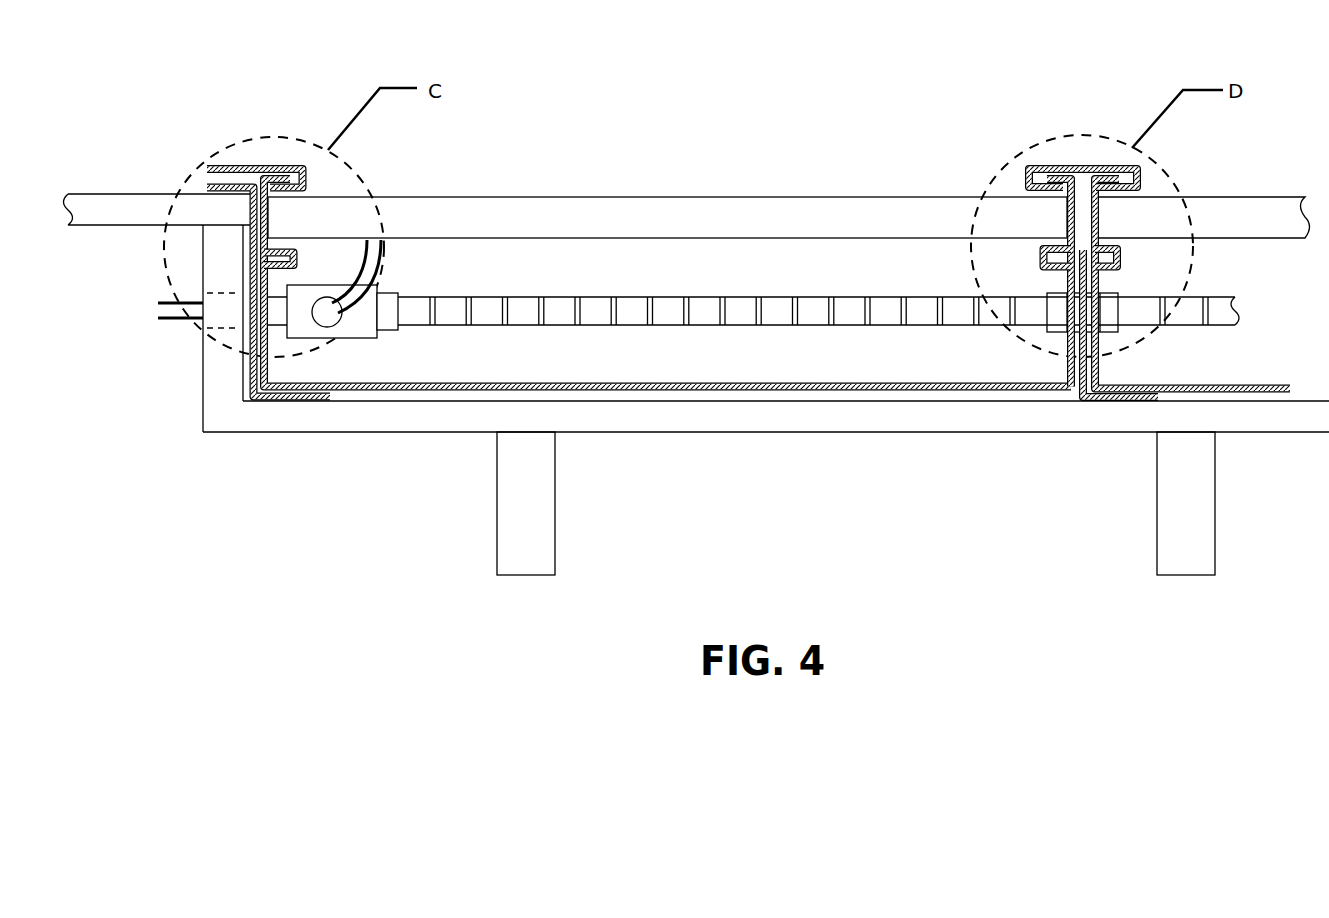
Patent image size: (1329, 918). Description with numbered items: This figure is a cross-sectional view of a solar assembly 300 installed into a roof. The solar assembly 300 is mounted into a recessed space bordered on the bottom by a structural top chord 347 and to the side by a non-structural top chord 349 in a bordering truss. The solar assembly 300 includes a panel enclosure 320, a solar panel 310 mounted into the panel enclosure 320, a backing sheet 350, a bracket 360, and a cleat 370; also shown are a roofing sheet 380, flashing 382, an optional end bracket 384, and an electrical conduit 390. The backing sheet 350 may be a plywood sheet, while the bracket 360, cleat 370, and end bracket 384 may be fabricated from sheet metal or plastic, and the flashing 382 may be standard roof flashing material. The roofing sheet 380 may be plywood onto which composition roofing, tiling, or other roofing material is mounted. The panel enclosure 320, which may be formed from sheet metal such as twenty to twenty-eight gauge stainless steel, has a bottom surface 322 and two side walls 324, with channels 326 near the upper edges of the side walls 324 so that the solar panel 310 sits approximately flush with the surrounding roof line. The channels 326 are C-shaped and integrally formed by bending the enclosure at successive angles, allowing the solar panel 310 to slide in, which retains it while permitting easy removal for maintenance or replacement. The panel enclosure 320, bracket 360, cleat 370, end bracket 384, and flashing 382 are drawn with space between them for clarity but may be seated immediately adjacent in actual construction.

The solar assembly 300 is at (771, 108).
The solar panel 310 is at (548, 213).
The panel enclosure 320 is at (397, 397).
The bottom surface 322 is at (628, 358).
The side walls 324 is at (267, 363).
The channels 326 is at (265, 210).
The structural top chord 347 is at (518, 560).
The non-structural top chord 349 is at (215, 413).
The backing sheet 350 is at (782, 423).
The bracket 360 is at (1078, 402).
The cleat 370 is at (1075, 167).
The roofing sheet 380 is at (142, 203).
The flashing 382 is at (250, 163).
The end bracket 384 is at (287, 403).
The electrical conduit 390 is at (852, 297).